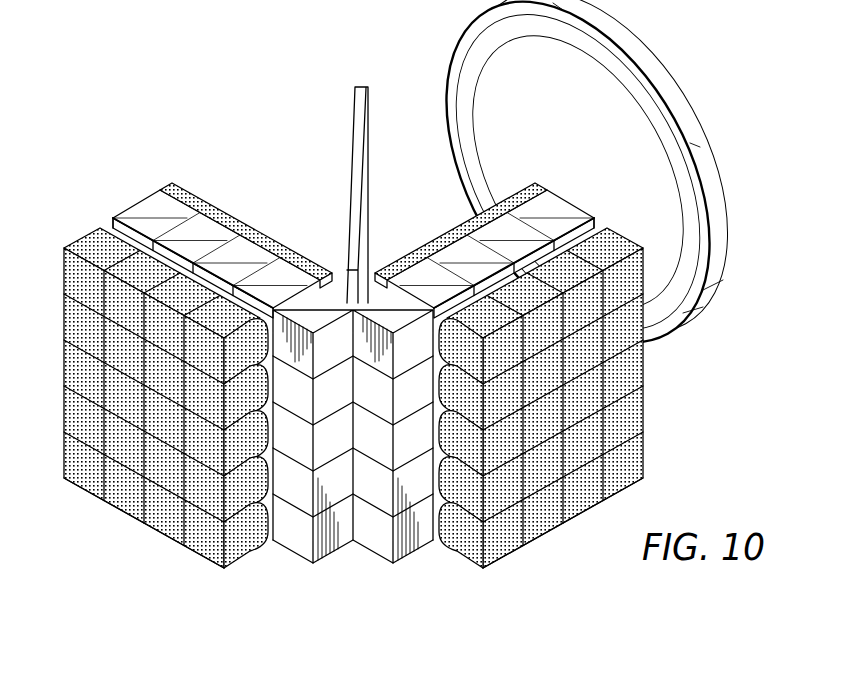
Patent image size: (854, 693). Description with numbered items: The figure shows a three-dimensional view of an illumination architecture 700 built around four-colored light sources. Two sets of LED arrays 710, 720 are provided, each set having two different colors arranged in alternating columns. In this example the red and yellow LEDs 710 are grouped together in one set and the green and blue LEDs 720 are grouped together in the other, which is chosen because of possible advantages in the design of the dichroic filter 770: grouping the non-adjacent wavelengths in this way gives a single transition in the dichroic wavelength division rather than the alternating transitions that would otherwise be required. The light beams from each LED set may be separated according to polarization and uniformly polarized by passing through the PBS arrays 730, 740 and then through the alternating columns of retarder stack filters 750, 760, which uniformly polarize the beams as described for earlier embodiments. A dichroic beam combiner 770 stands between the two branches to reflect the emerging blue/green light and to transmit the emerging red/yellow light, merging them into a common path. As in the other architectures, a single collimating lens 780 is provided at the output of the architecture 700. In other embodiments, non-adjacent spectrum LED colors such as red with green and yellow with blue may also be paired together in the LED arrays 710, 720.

The illumination architecture 700 is at (172, 58).
The LED array 710 is at (165, 409).
The LED array 720 is at (543, 409).
The PBS array 730 is at (195, 244).
The PBS array 740 is at (353, 462).
The retarder stack filters 750 is at (249, 229).
The retarder stack filters 760 is at (481, 244).
The dichroic beam combiner 770 is at (358, 145).
The collimating lens 780 is at (635, 57).